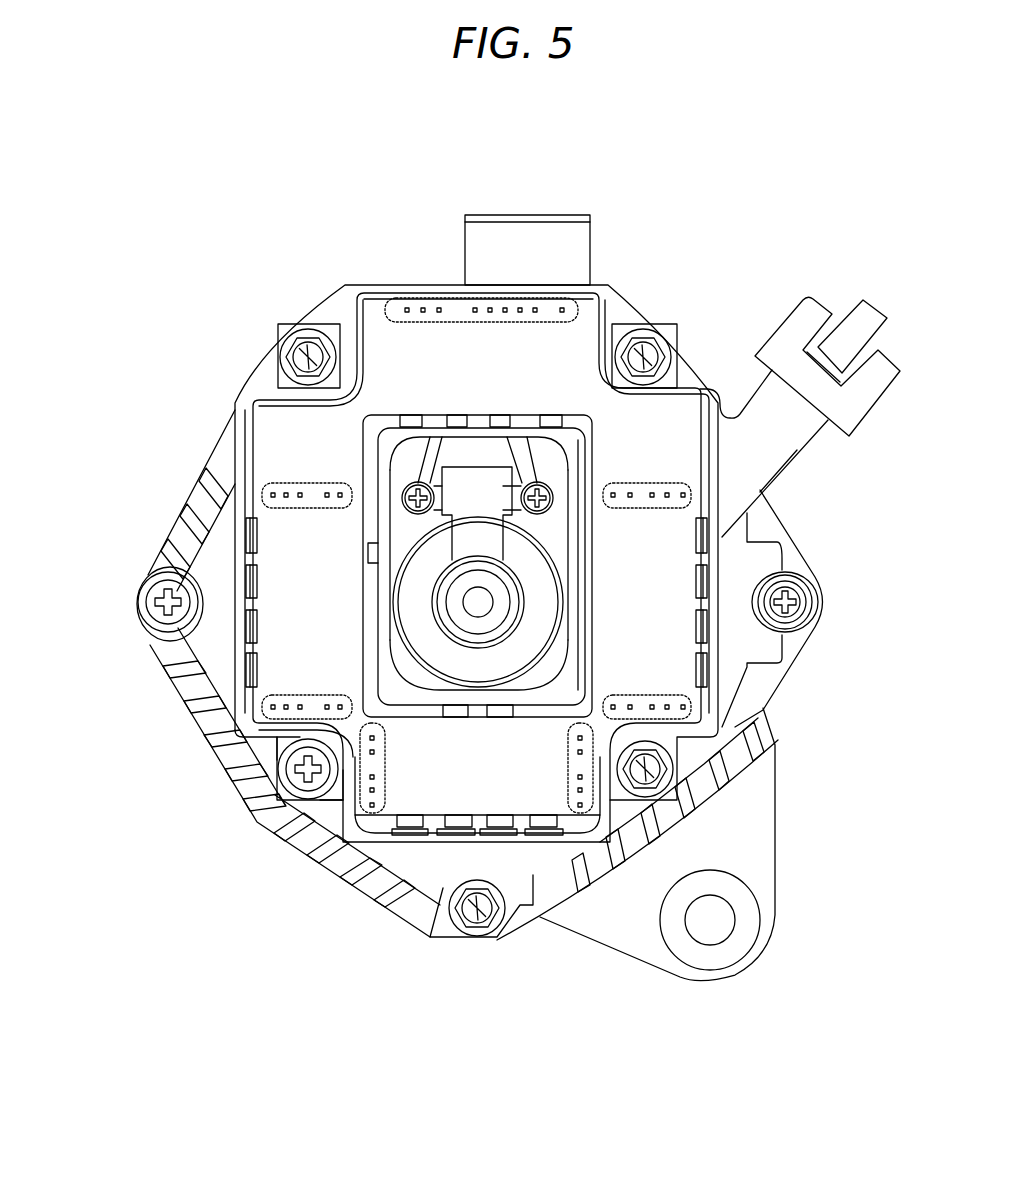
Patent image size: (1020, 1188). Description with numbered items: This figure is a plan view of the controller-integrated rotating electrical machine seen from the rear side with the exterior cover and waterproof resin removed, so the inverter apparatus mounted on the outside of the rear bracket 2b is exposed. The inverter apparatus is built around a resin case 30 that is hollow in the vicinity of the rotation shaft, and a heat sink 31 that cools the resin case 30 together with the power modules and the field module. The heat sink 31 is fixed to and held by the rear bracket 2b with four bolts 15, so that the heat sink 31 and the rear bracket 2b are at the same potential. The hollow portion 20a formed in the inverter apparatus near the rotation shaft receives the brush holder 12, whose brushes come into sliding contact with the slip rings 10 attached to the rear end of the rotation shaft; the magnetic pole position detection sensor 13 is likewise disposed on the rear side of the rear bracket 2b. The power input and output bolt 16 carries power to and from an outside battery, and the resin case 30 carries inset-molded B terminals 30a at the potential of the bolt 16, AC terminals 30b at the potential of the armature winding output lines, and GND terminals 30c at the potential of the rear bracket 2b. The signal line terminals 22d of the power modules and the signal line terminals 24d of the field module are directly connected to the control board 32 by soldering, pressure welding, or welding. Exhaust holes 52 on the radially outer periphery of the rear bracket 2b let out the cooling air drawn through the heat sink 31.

The slip rings 10 is at (505, 603).
The brush holder 12 is at (478, 535).
The magnetic pole position detection sensor 13 is at (535, 575).
The bolts 15 is at (305, 778).
The power input and output bolt 16 is at (842, 347).
The hollow portion 20a is at (545, 467).
The signal line terminals 22d is at (335, 797).
The signal line terminals 24d is at (575, 312).
The rear bracket 2b is at (195, 645).
The resin case 30 is at (246, 431).
The B terminals 30a is at (578, 660).
The AC terminals 30b is at (455, 835).
The GND terminals 30c is at (360, 812).
The heat sink 31 is at (265, 745).
The control board 32 is at (305, 603).
The exhaust holes 52 is at (230, 722).